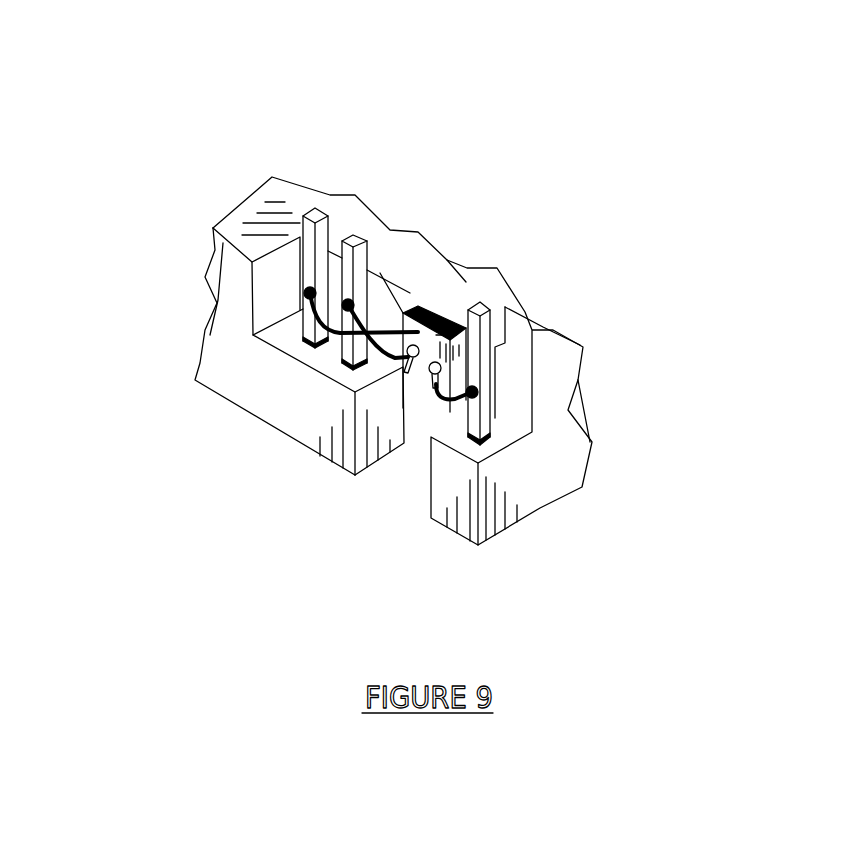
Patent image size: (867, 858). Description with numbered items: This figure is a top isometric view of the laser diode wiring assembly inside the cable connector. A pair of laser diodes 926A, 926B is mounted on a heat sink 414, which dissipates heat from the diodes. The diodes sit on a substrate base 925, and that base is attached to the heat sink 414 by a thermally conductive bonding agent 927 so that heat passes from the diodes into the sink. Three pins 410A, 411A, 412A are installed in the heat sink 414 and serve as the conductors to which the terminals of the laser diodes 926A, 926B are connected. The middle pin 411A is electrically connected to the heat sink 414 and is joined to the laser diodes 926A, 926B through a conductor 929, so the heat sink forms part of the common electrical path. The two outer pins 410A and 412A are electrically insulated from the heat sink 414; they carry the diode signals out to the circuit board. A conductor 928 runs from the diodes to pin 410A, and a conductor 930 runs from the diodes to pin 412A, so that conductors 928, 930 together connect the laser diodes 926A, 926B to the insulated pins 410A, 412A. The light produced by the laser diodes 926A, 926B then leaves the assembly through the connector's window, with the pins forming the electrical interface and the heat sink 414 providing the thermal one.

The heat sink 414 is at (220, 215).
The pin 410A is at (315, 197).
The pin 411A is at (358, 222).
The pin 412A is at (497, 297).
The substrate base 925 is at (435, 302).
The thermally conductive bonding agent 927 is at (484, 298).
The conductor 928 is at (372, 334).
The conductor 929 is at (403, 367).
The conductor 930 is at (455, 402).
The laser diode 926A is at (403, 372).
The laser diode 926B is at (436, 390).